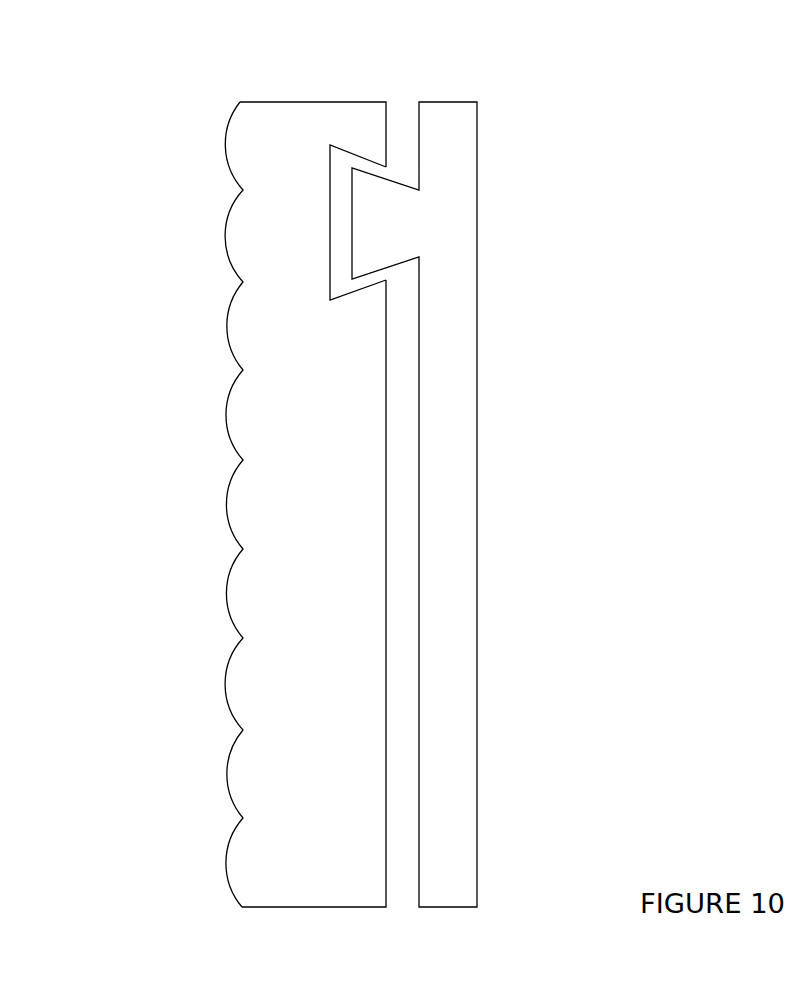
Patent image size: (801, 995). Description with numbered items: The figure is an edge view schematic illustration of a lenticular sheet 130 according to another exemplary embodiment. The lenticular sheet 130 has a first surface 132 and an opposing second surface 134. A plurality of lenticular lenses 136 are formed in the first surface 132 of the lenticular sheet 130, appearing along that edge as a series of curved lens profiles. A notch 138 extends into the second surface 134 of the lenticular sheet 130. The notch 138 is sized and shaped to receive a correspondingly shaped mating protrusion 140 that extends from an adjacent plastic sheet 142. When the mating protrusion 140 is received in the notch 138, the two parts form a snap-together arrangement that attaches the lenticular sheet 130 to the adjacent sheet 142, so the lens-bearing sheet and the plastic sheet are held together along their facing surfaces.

The lenticular sheet 130 is at (177, 36).
The first surface 132 is at (192, 793).
The second surface 134 is at (346, 801).
The lenticular lenses 136 is at (226, 603).
The notch 138 is at (327, 172).
The mating protrusion 140 is at (407, 116).
The adjacent plastic sheet 142 is at (478, 337).